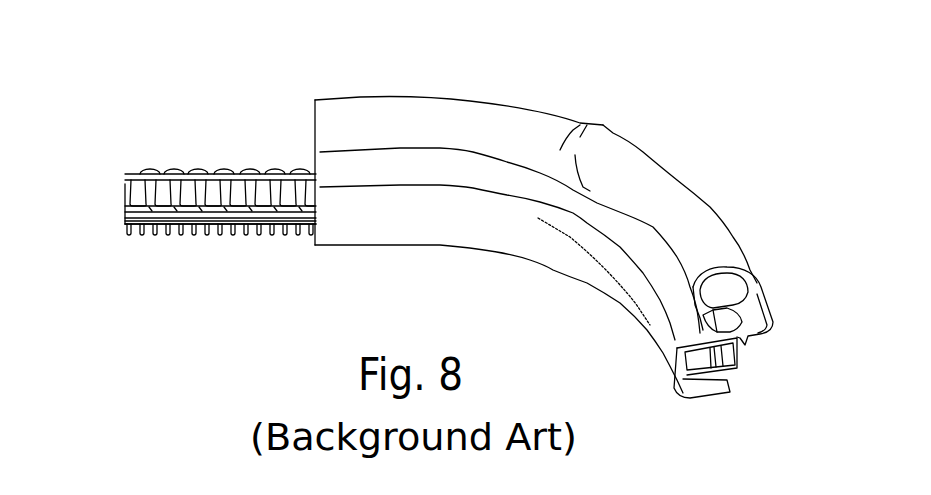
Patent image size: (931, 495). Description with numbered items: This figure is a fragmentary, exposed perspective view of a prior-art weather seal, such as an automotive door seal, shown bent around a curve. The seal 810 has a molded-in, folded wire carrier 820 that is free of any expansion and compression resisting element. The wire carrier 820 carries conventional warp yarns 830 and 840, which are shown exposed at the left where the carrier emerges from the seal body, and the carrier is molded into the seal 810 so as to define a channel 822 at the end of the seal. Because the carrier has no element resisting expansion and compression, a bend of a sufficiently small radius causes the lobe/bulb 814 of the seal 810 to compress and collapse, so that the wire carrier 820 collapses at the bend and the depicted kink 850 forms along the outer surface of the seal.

The seal 810 is at (397, 97).
The lobe/bulb 814 is at (517, 120).
The kink 850 is at (603, 124).
The channel 822 is at (738, 358).
The wire carrier 820 is at (260, 237).
The warp yarns 830 is at (126, 211).
The warp yarns 840 is at (126, 221).